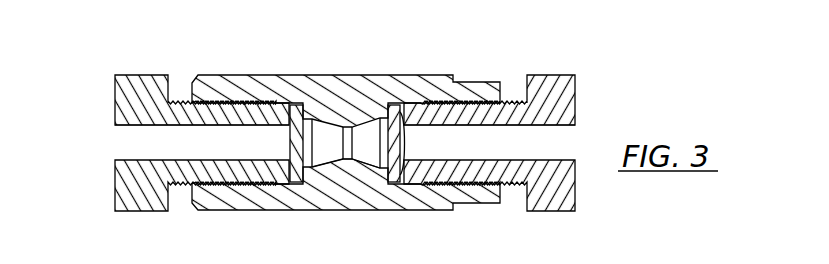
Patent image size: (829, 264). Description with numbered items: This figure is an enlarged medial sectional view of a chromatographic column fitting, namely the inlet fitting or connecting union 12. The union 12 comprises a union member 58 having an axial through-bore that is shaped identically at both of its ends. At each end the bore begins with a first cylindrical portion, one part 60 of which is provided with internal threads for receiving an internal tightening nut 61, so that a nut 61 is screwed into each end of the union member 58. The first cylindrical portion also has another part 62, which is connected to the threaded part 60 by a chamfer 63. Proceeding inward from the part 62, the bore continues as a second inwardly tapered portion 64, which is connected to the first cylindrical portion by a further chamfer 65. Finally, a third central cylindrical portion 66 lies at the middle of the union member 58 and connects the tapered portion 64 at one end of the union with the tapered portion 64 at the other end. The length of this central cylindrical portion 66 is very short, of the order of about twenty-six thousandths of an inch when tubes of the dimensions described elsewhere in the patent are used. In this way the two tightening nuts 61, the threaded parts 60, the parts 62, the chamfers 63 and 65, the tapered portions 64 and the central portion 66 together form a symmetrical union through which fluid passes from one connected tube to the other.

The inlet fitting or connecting union 12 is at (500, 49).
The union member 58 is at (242, 82).
The internally threaded part of first cylindrical portion 60 is at (228, 126).
The internal tightening nut 61 is at (120, 102).
The another part of first cylindrical portion 62 is at (296, 115).
The chamfer 63 is at (268, 98).
The second inwardly tapered portion 64 is at (320, 172).
The chamfer 65 is at (345, 124).
The third central cylindrical portion 66 is at (352, 162).